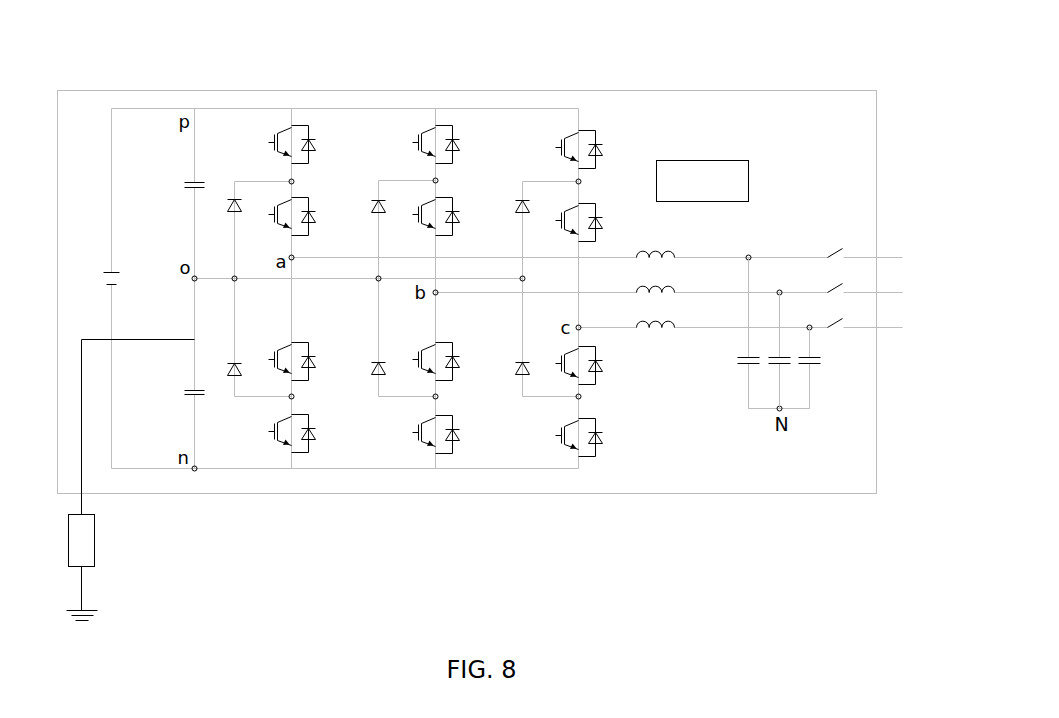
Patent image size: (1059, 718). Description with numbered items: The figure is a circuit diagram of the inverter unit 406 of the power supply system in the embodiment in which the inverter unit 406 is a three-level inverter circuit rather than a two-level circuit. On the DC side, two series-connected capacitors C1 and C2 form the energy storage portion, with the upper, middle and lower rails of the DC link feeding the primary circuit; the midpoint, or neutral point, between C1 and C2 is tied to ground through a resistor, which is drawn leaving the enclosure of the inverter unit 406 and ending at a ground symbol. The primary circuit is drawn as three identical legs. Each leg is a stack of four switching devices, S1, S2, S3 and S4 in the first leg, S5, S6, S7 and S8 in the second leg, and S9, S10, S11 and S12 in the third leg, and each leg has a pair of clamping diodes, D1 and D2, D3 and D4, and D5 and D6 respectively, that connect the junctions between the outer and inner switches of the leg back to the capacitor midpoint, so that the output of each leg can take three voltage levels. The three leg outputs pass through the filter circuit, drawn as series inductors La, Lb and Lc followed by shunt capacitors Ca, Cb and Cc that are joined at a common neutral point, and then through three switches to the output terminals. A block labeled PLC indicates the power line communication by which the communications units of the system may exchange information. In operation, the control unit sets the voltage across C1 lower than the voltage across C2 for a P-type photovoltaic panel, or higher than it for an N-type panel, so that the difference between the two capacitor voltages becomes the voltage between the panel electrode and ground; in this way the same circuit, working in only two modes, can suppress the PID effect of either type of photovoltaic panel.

The inverter unit 406 is at (440, 86).
The switch S1 is at (290, 153).
The switch S2 is at (290, 225).
The switch S3 is at (290, 368).
The switch S4 is at (287, 441).
The switch S5 is at (432, 152).
The switch S6 is at (432, 225).
The switch S7 is at (432, 369).
The switch S8 is at (432, 442).
The switch S9 is at (572, 156).
The switch S10 is at (570, 230).
The switch S11 is at (569, 372).
The switch S12 is at (569, 445).
The clamping diode D1 is at (224, 218).
The clamping diode D2 is at (221, 372).
The clamping diode D3 is at (367, 218).
The clamping diode D4 is at (367, 382).
The clamping diode D5 is at (511, 218).
The clamping diode D6 is at (511, 382).
The capacitor C1 is at (180, 185).
The capacitor C2 is at (178, 396).
The filter inductor La is at (656, 244).
The filter inductor Lb is at (656, 279).
The filter inductor Lc is at (656, 314).
The filter capacitor Ca is at (741, 333).
The filter capacitor Cb is at (771, 351).
The filter capacitor Cc is at (803, 368).
The power line communication PLC is at (703, 181).